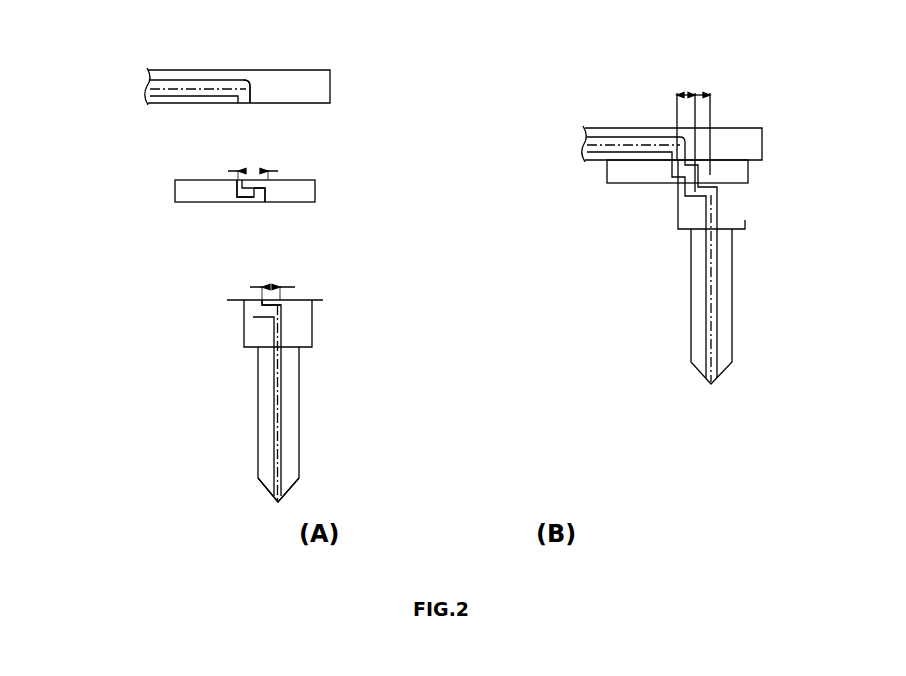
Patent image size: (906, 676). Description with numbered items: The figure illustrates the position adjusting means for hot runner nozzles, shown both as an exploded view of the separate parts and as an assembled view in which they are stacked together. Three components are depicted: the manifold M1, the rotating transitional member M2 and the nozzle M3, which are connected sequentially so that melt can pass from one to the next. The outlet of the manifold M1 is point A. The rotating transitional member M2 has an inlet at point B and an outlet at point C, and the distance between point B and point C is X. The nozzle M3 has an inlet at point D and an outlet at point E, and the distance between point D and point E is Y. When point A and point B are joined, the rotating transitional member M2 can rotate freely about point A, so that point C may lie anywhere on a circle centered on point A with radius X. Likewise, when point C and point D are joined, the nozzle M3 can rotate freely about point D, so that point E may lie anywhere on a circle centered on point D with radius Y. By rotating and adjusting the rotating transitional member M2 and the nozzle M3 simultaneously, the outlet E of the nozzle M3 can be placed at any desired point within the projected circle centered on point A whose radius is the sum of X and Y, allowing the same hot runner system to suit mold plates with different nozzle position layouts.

The manifold M1 is at (146, 76).
The rotating transitional member M2 is at (175, 198).
The nozzle M3 is at (312, 339).
The outlet of the manifold A is at (247, 102).
The inlet of the rotating transitional member B is at (243, 180).
The outlet of the rotating transitional member C is at (262, 202).
The inlet of the nozzle D is at (262, 300).
The outlet of the nozzle E is at (280, 501).
The distance between point B and point C X is at (461, 133).
The distance between point D and point E Y is at (480, 187).